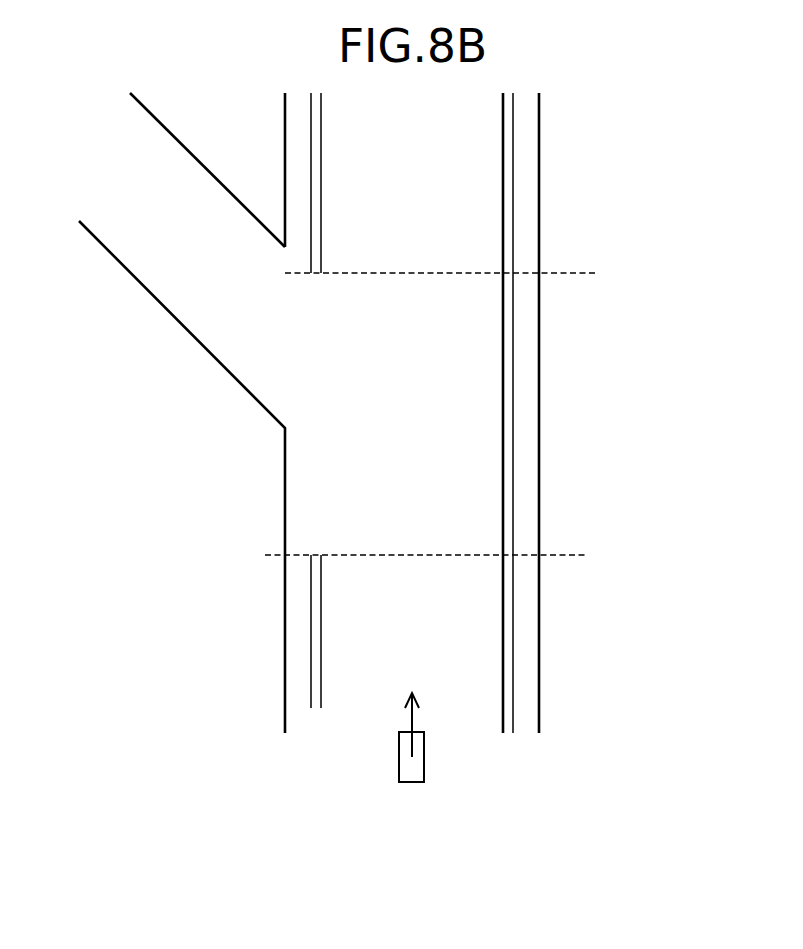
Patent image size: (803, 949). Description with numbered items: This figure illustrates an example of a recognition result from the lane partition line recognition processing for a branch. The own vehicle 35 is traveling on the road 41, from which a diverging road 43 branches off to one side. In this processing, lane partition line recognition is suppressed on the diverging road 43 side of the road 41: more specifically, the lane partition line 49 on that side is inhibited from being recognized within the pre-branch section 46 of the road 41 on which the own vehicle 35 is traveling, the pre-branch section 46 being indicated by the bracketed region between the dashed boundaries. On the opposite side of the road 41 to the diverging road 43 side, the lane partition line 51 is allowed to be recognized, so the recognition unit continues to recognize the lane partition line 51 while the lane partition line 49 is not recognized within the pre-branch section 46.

The diverging road 43 is at (157, 150).
The lane partition line 49 is at (317, 157).
The road 41 is at (462, 170).
The lane partition line 51 is at (508, 120).
The pre-branch section 46 is at (603, 273).
The own vehicle 35 is at (425, 758).